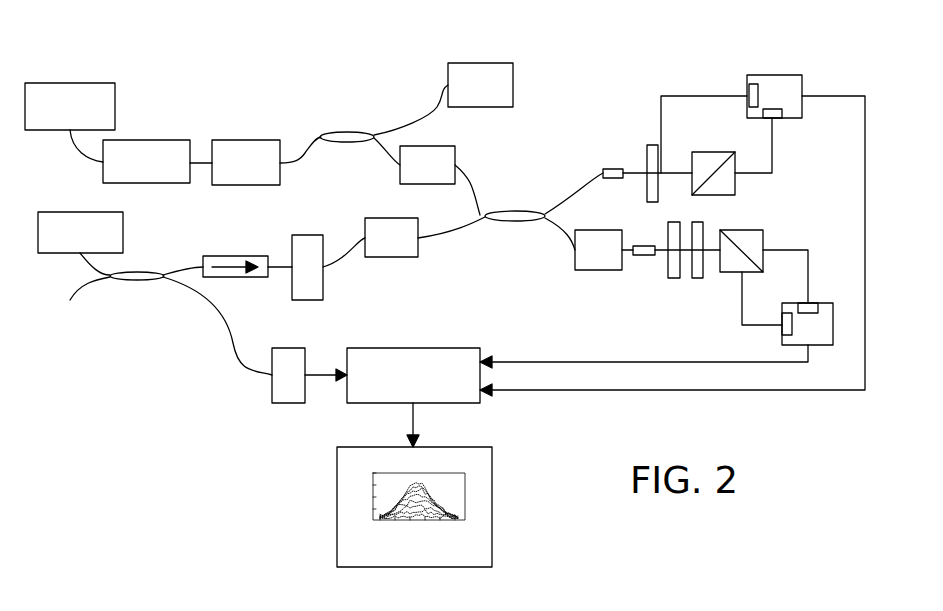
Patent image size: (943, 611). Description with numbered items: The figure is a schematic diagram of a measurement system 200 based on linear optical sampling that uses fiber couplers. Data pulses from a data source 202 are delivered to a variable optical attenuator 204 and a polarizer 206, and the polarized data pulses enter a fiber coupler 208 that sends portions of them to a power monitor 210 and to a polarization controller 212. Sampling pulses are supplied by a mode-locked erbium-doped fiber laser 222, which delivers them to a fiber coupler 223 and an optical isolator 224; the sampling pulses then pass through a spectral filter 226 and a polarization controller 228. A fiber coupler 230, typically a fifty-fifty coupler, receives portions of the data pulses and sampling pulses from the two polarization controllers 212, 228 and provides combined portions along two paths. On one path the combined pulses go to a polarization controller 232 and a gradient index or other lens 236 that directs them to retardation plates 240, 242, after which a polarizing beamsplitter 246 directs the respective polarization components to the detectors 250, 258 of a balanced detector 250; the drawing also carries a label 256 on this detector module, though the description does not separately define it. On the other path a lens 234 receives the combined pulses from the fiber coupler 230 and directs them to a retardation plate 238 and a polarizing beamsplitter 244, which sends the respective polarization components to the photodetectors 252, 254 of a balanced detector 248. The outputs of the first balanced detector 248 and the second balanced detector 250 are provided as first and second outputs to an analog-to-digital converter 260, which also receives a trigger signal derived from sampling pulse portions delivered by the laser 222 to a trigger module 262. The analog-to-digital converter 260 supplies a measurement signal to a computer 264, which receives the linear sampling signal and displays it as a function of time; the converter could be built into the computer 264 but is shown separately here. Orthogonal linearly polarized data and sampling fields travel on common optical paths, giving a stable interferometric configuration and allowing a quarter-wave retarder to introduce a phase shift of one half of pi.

The measurement system 200 is at (148, 465).
The data source 202 is at (70, 83).
The variable optical attenuator 204 is at (147, 140).
The polarizer 206 is at (247, 140).
The fiber coupler 208 is at (347, 132).
The power monitor 210 is at (481, 63).
The polarization controller 212 is at (440, 146).
The mode-locked erbium-doped fiber laser 222 is at (123, 232).
The fiber coupler 223 is at (133, 280).
The optical isolator 224 is at (237, 256).
The spectral filter 226 is at (315, 300).
The polarization controller 228 is at (390, 257).
The fiber coupler 230 is at (522, 211).
The polarization controller 232 is at (590, 270).
The lens 234 is at (604, 169).
The lens 236 is at (645, 255).
The retardation plate 238 is at (703, 151).
The retardation plate 240 is at (670, 278).
The retardation plate 242 is at (698, 278).
The polarizing beamsplitter 244 is at (653, 145).
The polarizing beamsplitter 246 is at (760, 230).
The balanced detector 248 is at (760, 75).
The balanced detector 250 is at (820, 303).
The photodetector 252 is at (780, 119).
The photodetector 254 is at (747, 85).
The detector module 256 is at (790, 326).
The detector 258 is at (782, 325).
The analog-to-digital converter 260 is at (448, 403).
The trigger module 262 is at (288, 403).
The computer 264 is at (492, 507).